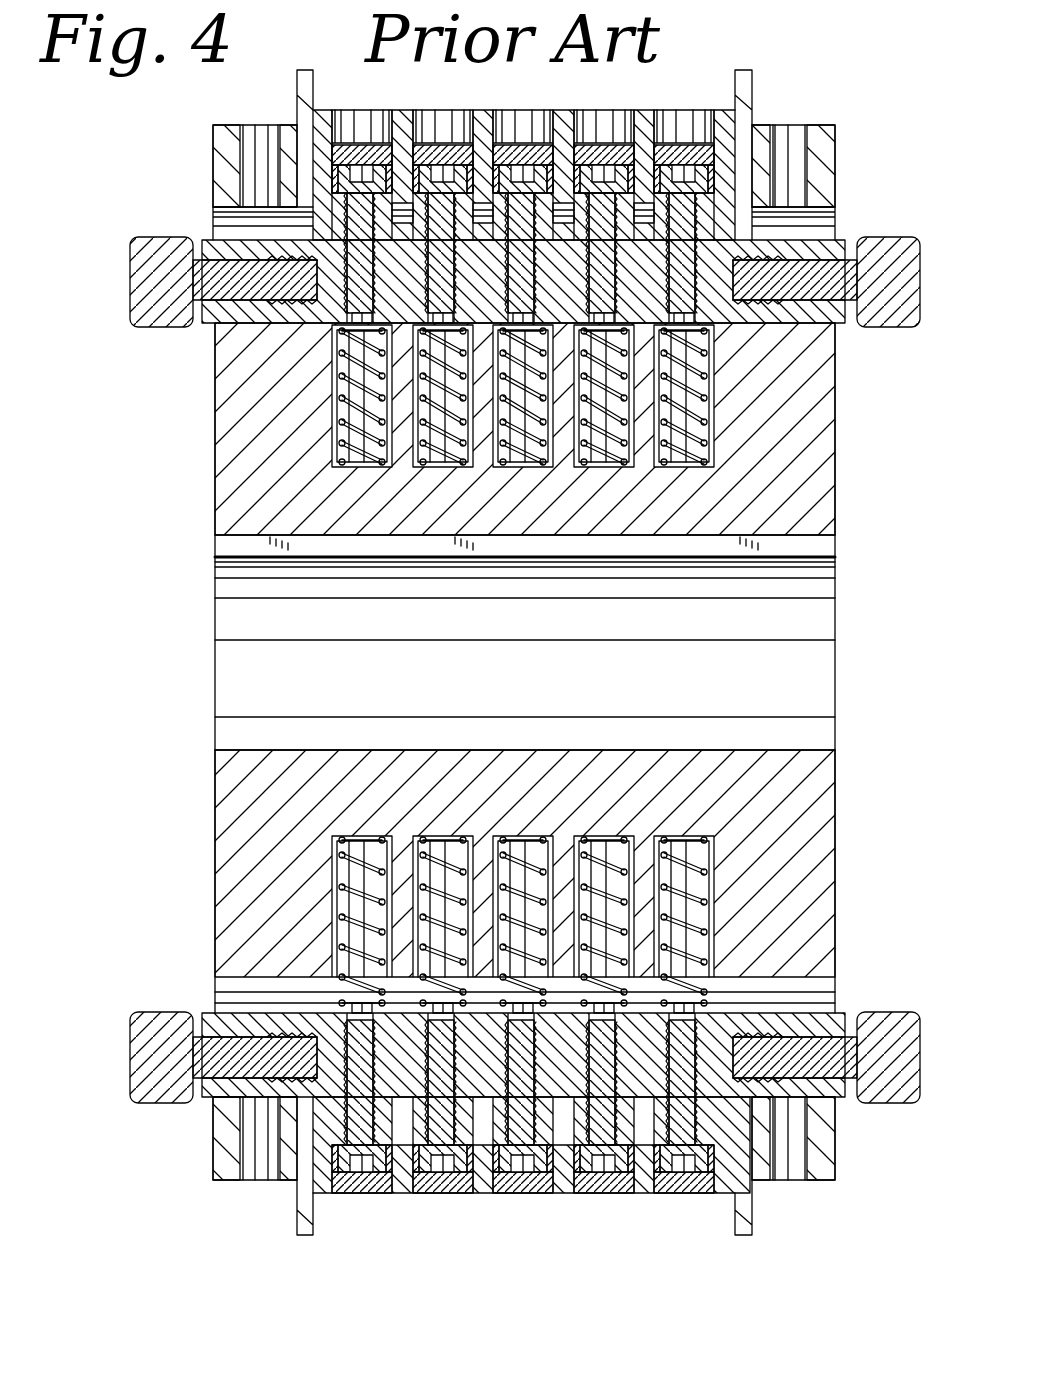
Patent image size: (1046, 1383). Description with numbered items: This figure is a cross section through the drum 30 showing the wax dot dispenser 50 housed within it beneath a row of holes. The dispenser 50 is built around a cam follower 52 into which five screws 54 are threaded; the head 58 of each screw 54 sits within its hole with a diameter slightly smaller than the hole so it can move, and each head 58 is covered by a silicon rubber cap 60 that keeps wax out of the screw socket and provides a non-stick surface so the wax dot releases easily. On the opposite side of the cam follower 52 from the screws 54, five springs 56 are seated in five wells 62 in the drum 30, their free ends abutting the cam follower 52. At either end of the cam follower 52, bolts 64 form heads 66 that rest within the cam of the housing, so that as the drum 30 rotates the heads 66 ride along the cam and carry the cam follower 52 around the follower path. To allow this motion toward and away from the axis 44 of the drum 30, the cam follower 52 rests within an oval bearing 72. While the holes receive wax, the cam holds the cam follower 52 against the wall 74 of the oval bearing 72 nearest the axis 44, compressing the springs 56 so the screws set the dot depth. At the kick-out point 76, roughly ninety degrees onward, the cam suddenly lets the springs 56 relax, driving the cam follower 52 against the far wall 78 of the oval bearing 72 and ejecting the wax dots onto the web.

The drum 30 is at (150, 512).
The axis 44 is at (505, 690).
The wax dot dispenser 50 is at (735, 353).
The cam follower 52 is at (217, 322).
The screws 54 is at (333, 308).
The springs 56 is at (333, 395).
The head 58 is at (335, 195).
The silicon rubber cap 60 is at (330, 163).
The wells 62 is at (347, 445).
The bolts 64 is at (242, 293).
The heads 66 is at (130, 275).
The oval bearing 72 is at (813, 218).
The wall 74 is at (793, 323).
The kick-out point 76 is at (497, 1215).
The wall 78 is at (837, 1123).